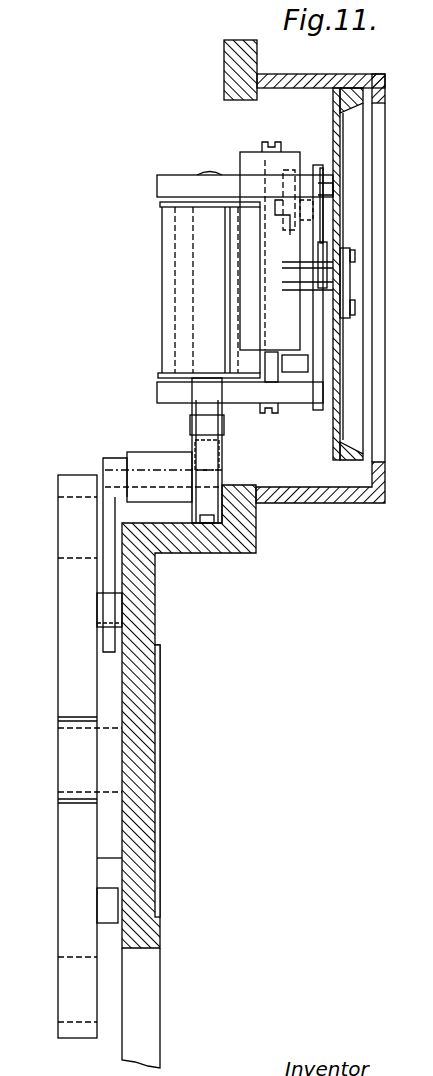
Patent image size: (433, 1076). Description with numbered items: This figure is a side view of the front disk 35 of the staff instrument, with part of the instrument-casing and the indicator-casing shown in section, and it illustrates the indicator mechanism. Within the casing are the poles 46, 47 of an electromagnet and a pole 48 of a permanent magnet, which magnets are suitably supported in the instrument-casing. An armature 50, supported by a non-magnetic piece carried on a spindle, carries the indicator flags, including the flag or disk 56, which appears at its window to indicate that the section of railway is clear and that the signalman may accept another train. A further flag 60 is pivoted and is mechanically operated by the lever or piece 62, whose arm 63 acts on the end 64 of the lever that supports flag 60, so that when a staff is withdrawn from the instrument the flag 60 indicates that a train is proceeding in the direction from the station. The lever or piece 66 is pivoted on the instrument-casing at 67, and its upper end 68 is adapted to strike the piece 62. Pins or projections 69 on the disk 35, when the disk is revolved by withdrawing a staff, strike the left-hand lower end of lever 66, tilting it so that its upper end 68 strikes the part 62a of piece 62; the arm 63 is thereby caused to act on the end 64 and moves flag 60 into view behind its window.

The front disk 35 is at (90, 756).
The electromagnet pole 46 is at (309, 180).
The electromagnet pole 47 is at (303, 397).
The permanent magnet pole 48 is at (276, 246).
The armature 50 is at (343, 214).
The flag or disk 56 is at (337, 232).
The flag 60 is at (327, 190).
The lever or piece 62 is at (205, 523).
The part of piece 62a is at (202, 441).
The arm 63 is at (320, 352).
The end of lever 64 is at (322, 266).
The lever or piece 66 is at (108, 568).
The pivot 67 is at (105, 475).
The upper end of lever 68 is at (193, 427).
The pins or projections 69 is at (100, 601).